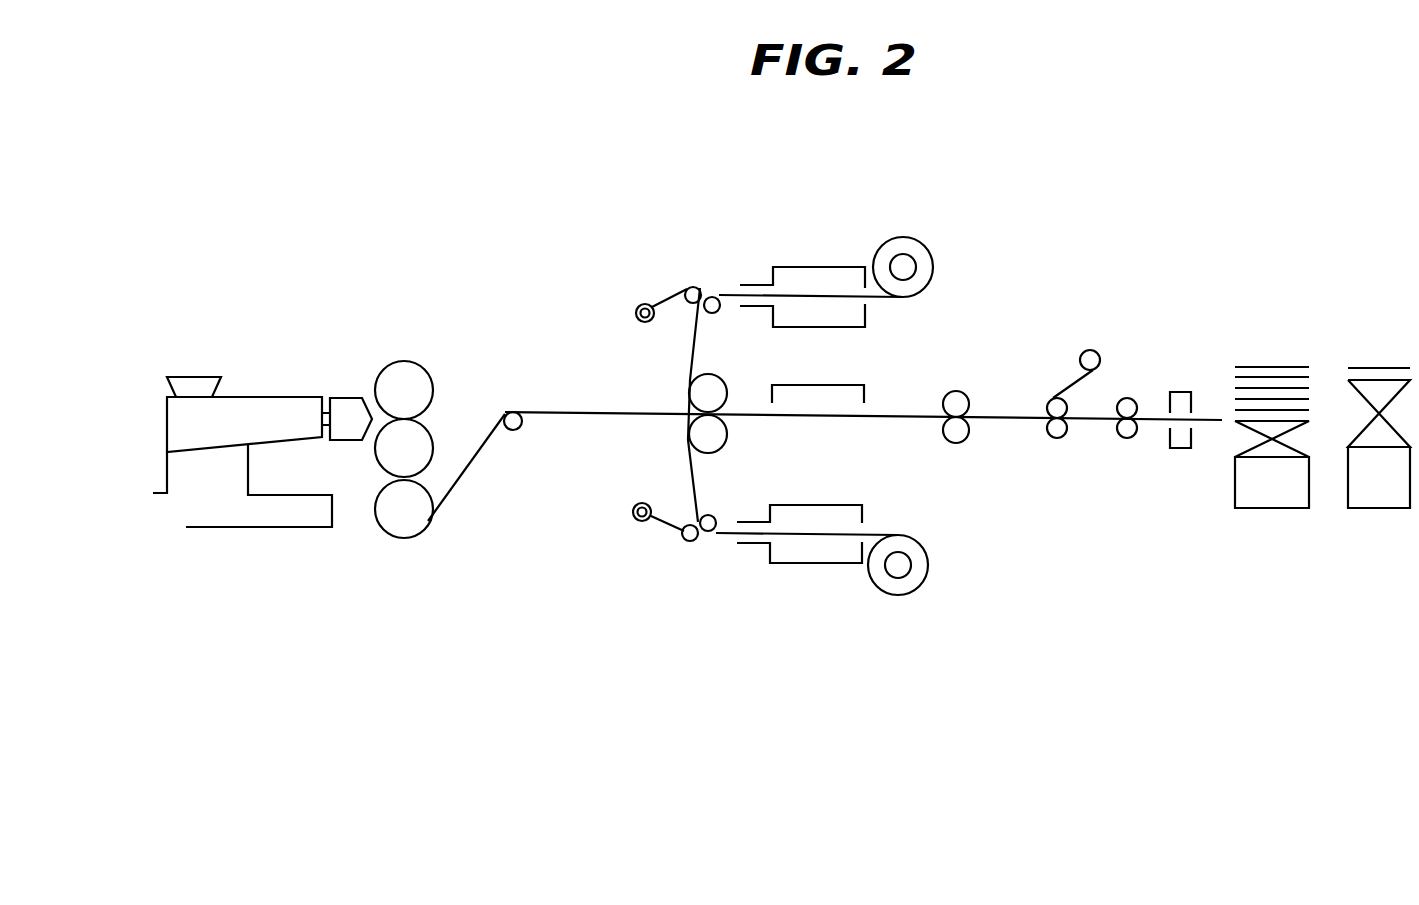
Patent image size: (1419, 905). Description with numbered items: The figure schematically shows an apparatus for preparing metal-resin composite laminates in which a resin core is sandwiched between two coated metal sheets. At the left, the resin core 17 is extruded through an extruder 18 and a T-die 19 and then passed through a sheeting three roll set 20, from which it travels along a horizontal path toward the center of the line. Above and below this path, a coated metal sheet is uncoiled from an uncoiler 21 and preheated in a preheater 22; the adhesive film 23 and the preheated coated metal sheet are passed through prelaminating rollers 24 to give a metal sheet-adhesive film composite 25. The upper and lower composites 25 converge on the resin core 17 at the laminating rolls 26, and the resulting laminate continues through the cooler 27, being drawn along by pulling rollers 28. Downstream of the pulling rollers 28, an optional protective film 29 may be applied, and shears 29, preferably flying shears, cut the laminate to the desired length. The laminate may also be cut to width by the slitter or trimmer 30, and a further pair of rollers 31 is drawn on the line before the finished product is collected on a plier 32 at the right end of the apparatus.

The resin core 17 is at (470, 467).
The extruder 18 is at (262, 397).
The T-die 19 is at (342, 398).
The sheeting three roll set 20 is at (405, 362).
The uncoiler 21 is at (908, 258).
The preheater 22 is at (805, 265).
The adhesive film 23 is at (640, 305).
The prelaminating rollers 24 is at (697, 288).
The metal sheet-adhesive film composite 25 is at (693, 353).
The laminating rolls 26 is at (697, 392).
The cooler 27 is at (867, 388).
The pulling rollers 28 is at (957, 444).
The shears 29 is at (1092, 350).
The slitter 30 is at (1180, 392).
The draw rollers 31 is at (1127, 438).
The plier 32 is at (1250, 367).